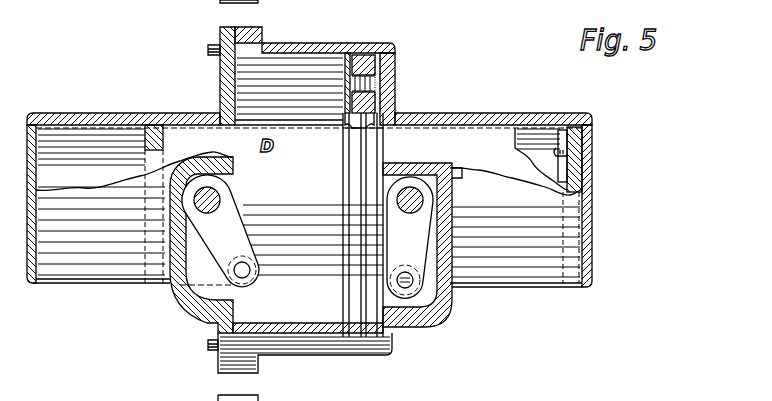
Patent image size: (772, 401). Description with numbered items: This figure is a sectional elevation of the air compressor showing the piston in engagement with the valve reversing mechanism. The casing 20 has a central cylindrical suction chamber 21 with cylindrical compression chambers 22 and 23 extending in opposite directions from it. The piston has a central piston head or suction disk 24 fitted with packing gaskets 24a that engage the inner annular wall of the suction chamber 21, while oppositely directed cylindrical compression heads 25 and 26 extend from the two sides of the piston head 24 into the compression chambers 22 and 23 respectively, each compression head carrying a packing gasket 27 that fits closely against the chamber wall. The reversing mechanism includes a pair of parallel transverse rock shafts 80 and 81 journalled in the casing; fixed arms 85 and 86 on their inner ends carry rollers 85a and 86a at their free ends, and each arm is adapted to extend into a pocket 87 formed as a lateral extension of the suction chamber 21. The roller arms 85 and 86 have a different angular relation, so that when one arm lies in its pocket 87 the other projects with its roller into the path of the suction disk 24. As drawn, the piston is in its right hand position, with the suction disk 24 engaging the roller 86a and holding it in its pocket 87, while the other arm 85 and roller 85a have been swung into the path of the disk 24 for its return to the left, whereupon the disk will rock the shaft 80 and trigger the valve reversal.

The casing 20 is at (309, 190).
The suction chamber 21 is at (320, 62).
The compression chamber 22 is at (130, 204).
The compression chamber 23 is at (585, 160).
The piston head 24 is at (348, 178).
The packing gaskets 24a is at (373, 148).
The compression head 25 is at (343, 141).
The compression head 26 is at (516, 161).
The packing gasket 27 is at (157, 124).
The rock shaft 80 is at (219, 197).
The rock shaft 81 is at (424, 198).
The arm 85 is at (220, 231).
The roller 85a is at (230, 280).
The arm 86 is at (410, 237).
The roller 86a is at (430, 315).
The pocket 87 is at (178, 293).